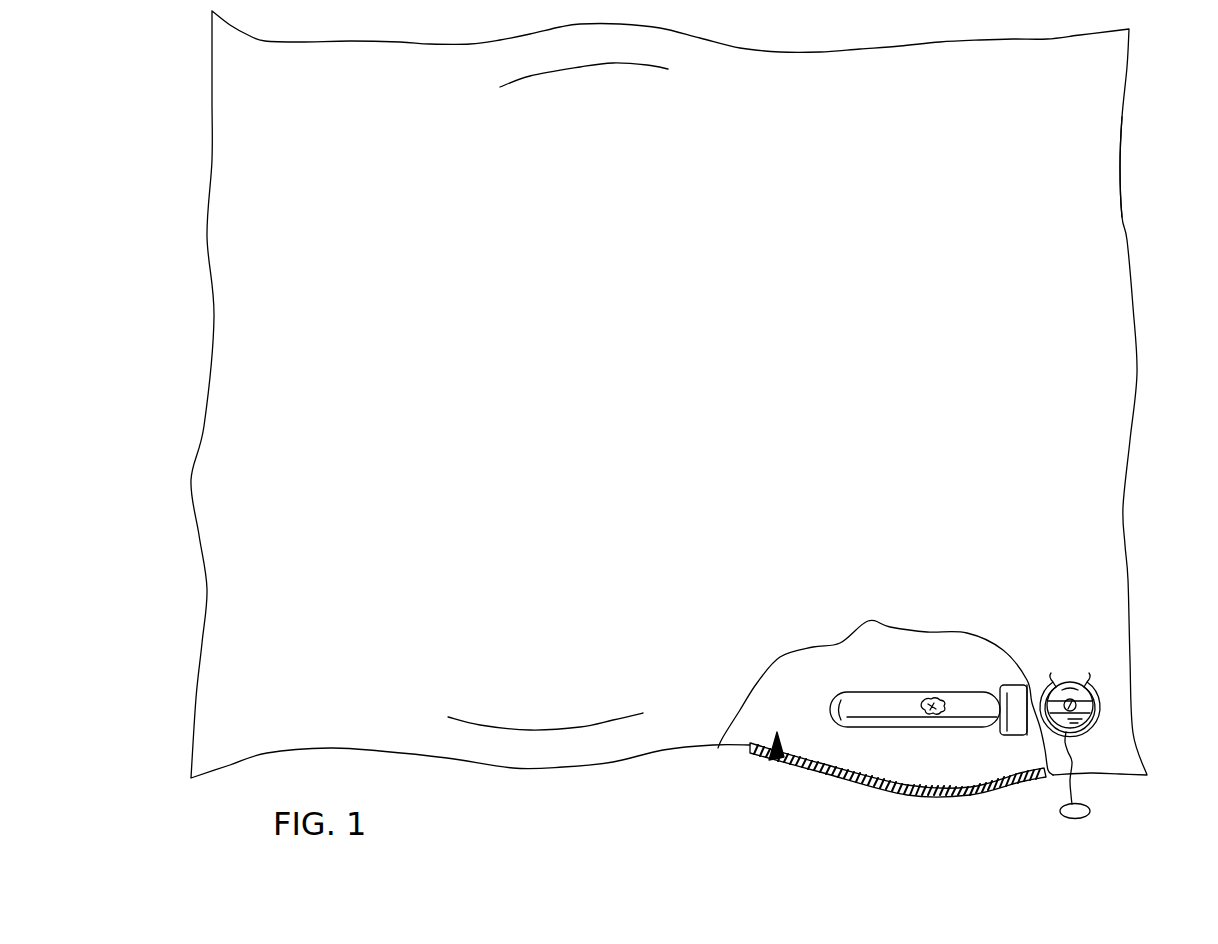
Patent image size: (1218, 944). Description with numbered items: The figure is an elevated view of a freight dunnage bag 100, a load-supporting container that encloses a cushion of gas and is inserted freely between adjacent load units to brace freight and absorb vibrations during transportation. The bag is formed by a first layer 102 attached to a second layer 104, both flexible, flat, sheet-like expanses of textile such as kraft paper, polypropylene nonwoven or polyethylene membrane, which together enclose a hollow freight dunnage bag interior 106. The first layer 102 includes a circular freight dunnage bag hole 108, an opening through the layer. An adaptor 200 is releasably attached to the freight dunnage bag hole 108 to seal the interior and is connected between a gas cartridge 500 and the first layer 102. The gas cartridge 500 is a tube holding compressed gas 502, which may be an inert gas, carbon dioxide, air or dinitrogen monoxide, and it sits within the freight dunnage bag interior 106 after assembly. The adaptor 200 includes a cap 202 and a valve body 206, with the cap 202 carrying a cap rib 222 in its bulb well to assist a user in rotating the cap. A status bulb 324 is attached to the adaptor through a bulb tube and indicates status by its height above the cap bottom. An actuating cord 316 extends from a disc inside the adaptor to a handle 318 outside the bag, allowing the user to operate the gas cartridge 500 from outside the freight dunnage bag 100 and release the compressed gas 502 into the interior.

The freight dunnage bag 100 is at (1103, 212).
The first layer 102 is at (1088, 155).
The second layer 104 is at (777, 718).
The freight dunnage bag interior 106 is at (772, 758).
The freight dunnage bag hole 108 is at (1078, 695).
The adaptor 200 is at (1022, 727).
The cap 202 is at (1102, 723).
The valve body 206 is at (1010, 697).
The cap rib 222 is at (1092, 705).
The actuating cord 316 is at (1080, 790).
The handle 318 is at (1083, 823).
The status bulb 324 is at (1078, 697).
The gas cartridge 500 is at (853, 717).
The compressed gas 502 is at (925, 715).